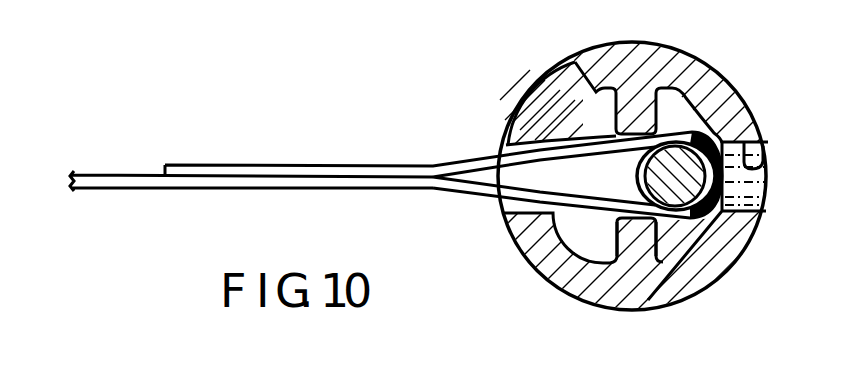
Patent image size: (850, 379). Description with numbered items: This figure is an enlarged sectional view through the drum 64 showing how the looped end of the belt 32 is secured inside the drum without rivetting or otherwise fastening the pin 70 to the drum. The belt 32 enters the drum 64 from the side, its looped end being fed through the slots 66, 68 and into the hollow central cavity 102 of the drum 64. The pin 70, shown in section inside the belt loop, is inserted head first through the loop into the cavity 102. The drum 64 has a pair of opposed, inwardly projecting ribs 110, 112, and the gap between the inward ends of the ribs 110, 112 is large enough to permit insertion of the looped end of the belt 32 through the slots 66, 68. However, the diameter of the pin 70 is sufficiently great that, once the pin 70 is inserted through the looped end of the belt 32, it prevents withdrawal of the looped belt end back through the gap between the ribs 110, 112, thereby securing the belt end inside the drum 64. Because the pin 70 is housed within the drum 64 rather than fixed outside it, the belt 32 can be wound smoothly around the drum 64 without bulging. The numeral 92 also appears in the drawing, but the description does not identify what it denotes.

The belt 32 is at (134, 173).
The drum 64 is at (715, 60).
The slot 66 is at (506, 149).
The slot 68 is at (764, 160).
The pin 70 is at (702, 182).
The loop 92 is at (637, 180).
The hollow central cavity 102 is at (536, 87).
The rib 110 is at (661, 243).
The rib 112 is at (579, 126).